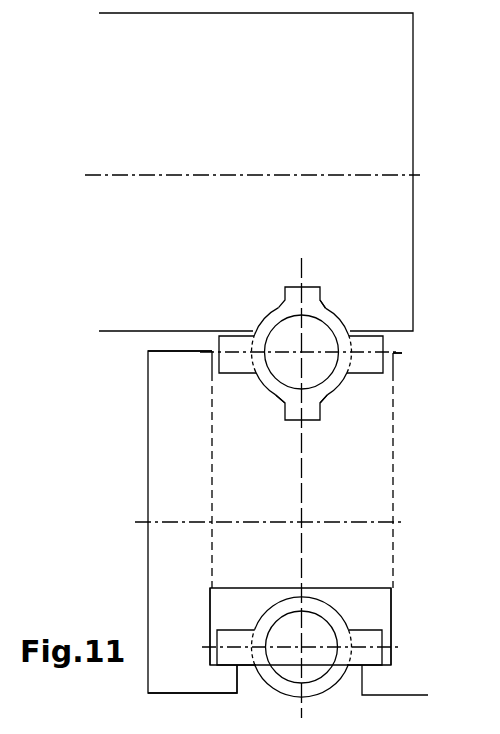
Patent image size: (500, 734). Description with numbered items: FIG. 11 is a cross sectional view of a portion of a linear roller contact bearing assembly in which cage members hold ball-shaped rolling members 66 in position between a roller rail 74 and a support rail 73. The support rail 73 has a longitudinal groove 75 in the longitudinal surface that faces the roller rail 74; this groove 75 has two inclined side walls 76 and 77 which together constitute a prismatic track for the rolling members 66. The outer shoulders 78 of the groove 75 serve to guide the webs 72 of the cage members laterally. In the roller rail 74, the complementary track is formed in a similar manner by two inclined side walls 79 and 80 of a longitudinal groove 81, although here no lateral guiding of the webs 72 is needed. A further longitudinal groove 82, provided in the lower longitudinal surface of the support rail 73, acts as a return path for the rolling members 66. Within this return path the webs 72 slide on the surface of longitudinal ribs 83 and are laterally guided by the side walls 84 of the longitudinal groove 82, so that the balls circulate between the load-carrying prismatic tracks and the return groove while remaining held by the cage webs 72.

The drive housing 74 is at (128, 77).
The support rail 73 is at (167, 465).
The outer shoulders 78 is at (212, 363).
The inclined side wall 79 is at (263, 330).
The ball-shaped rolling members 66 is at (340, 322).
The longitudinal groove 81 is at (313, 292).
The inclined side wall 80 is at (328, 302).
The longitudinal groove 75 is at (310, 412).
The inclined side wall 76 is at (337, 390).
The inclined side wall 77 is at (278, 401).
The webs 72 is at (378, 345).
The longitudinal groove 82 is at (367, 598).
The side walls 84 is at (210, 605).
The longitudinal ribs 83 is at (225, 680).